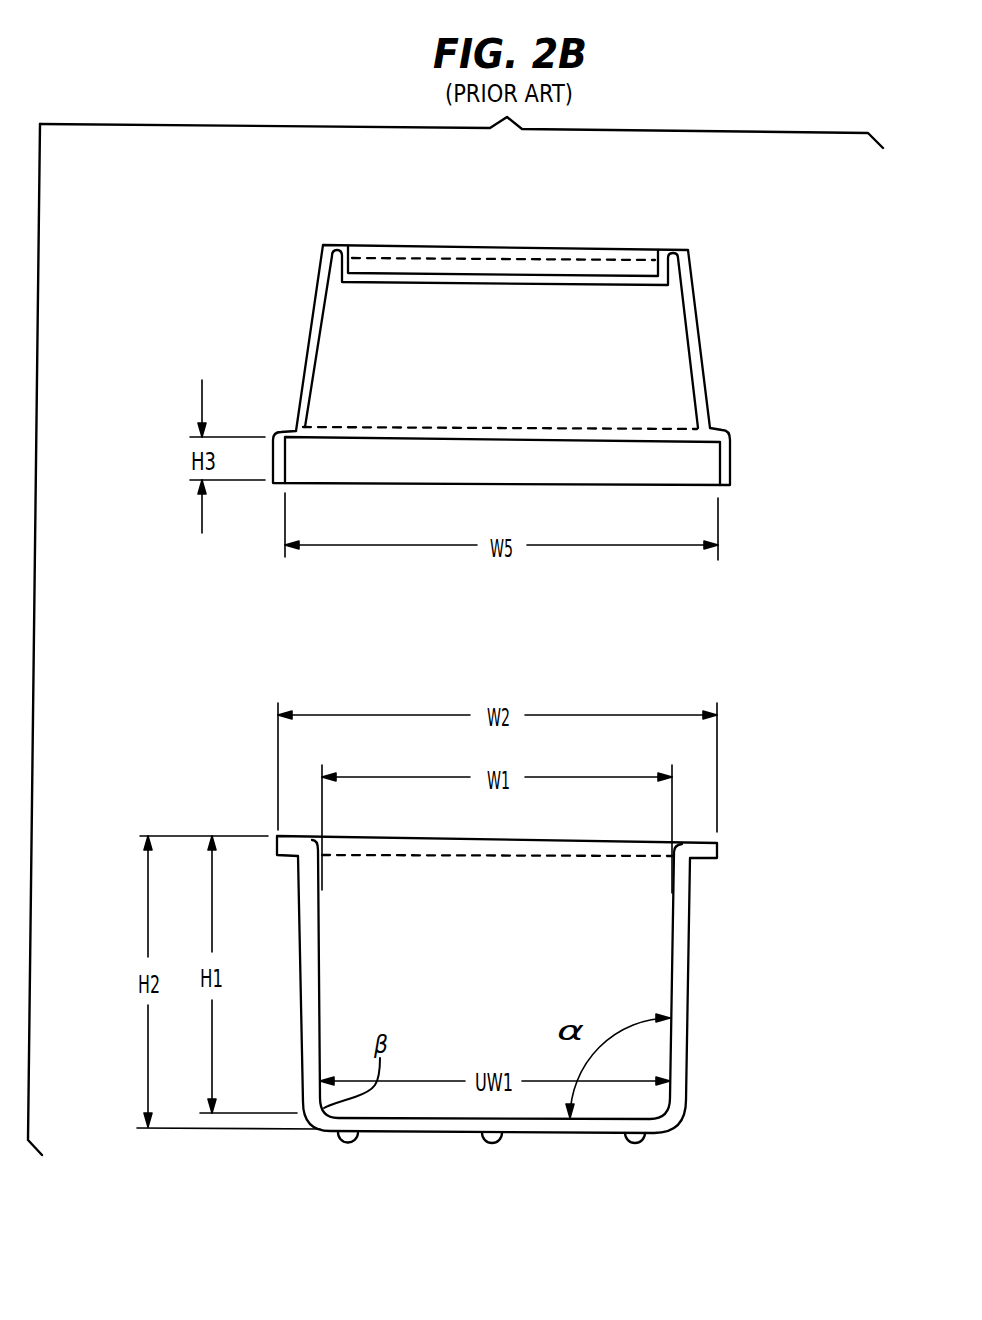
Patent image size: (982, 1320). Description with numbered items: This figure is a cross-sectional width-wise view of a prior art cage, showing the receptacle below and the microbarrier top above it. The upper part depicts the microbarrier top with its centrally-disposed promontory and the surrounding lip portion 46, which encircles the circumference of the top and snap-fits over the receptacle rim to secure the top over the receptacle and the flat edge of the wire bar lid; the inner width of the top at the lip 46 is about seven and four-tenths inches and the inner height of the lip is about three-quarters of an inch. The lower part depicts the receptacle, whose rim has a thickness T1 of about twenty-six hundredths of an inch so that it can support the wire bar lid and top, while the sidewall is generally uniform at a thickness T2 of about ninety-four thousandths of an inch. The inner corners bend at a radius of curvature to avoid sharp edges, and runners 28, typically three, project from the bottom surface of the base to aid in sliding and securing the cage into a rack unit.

The lip portion 46 is at (703, 467).
The runners 28 is at (352, 1136).
The rim thickness T1 is at (692, 823).
The sidewall thickness T2 is at (303, 1122).